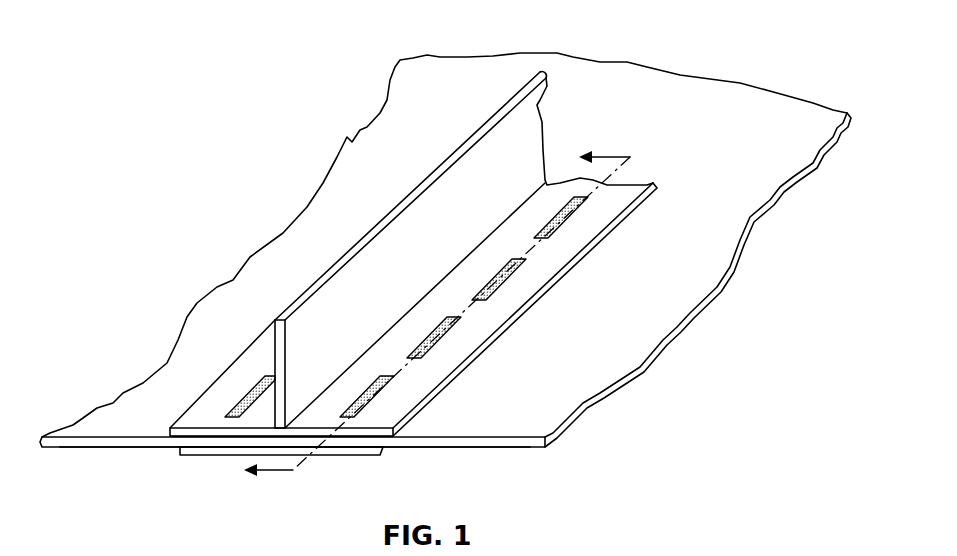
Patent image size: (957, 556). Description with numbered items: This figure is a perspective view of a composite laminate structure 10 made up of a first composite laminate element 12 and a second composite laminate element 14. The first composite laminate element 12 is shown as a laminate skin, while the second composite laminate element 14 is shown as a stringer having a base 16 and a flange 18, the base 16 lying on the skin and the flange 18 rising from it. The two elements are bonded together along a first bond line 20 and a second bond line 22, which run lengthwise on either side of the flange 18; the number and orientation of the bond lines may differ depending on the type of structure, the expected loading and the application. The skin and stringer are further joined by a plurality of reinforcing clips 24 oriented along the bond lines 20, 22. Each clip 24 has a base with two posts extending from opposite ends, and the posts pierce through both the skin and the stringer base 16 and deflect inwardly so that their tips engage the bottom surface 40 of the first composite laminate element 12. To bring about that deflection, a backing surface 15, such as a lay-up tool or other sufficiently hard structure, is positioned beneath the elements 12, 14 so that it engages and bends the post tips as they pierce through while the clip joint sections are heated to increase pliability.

The composite laminate structure 10 is at (262, 157).
The first composite laminate element 12 is at (485, 77).
The second composite laminate element 14 is at (530, 101).
The backing surface 15 is at (335, 452).
The base 16 is at (257, 367).
The flange 18 is at (320, 303).
The first bond line 20 is at (467, 310).
The second bond line 22 is at (245, 405).
The reinforcing clip 24 is at (565, 215).
The bottom surface 40 is at (507, 448).